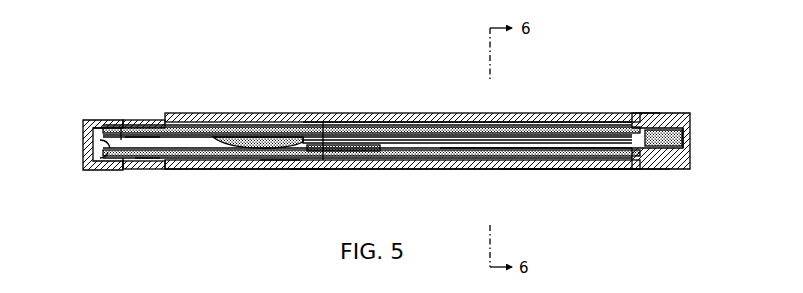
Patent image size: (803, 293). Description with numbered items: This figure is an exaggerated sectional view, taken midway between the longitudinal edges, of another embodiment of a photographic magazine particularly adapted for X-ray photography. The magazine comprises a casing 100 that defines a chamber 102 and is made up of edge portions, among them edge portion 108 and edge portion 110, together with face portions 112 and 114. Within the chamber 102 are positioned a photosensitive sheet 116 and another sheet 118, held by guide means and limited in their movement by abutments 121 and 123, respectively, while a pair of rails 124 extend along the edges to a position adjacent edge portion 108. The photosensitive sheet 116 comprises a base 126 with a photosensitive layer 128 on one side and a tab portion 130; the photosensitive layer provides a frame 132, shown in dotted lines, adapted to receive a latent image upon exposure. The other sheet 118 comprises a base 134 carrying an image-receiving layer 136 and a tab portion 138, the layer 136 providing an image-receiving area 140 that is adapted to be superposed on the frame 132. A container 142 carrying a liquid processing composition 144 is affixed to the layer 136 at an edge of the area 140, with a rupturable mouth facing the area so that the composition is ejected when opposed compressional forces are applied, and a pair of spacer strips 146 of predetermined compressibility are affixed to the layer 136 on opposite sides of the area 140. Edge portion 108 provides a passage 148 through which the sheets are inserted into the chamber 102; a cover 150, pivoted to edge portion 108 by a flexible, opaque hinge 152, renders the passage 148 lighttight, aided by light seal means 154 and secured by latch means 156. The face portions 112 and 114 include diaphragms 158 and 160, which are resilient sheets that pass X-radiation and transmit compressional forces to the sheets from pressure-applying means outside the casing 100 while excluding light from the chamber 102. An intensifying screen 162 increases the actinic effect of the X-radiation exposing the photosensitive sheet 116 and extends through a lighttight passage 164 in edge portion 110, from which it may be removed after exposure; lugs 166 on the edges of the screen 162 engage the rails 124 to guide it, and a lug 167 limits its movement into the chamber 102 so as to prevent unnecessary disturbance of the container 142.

The casing 100 is at (305, 182).
The chamber 102 is at (546, 170).
The edge portion 108 is at (117, 150).
The edge portion 110 is at (687, 171).
The face portion 112 is at (240, 169).
The face portion 114 is at (206, 114).
The photosensitive sheet 116 is at (402, 162).
The other sheet 118 is at (498, 120).
The abutment 121 is at (658, 168).
The abutment 123 is at (655, 120).
The rails 124 is at (168, 135).
The base 126 is at (414, 157).
The photosensitive layer 128 is at (460, 153).
The tab portion 130 is at (105, 154).
The frame 132 is at (323, 142).
The base 134 is at (425, 130).
The image-receiving layer 136 is at (458, 134).
The tab portion 138 is at (101, 126).
The image-receiving area 140 is at (320, 121).
The container 142 is at (296, 139).
The liquid processing composition 144 is at (256, 142).
The spacer strips 146 is at (383, 139).
The passage 148 is at (142, 139).
The cover 150 is at (82, 143).
The hinge 152 is at (122, 126).
The light seal means 154 is at (128, 171).
The latch means 156 is at (143, 171).
The diaphragm 158 is at (280, 170).
The diaphragm 160 is at (355, 135).
The intensifying screen 162 is at (496, 148).
The lighttight passage 164 is at (688, 129).
The lugs 166 is at (334, 143).
The lug 167 is at (689, 123).